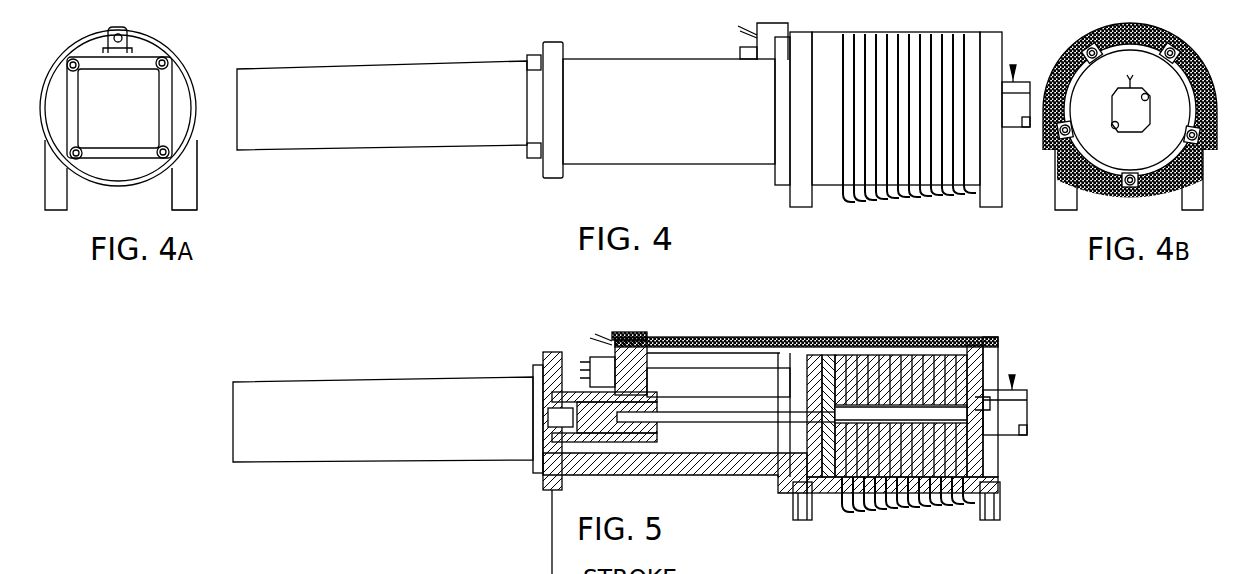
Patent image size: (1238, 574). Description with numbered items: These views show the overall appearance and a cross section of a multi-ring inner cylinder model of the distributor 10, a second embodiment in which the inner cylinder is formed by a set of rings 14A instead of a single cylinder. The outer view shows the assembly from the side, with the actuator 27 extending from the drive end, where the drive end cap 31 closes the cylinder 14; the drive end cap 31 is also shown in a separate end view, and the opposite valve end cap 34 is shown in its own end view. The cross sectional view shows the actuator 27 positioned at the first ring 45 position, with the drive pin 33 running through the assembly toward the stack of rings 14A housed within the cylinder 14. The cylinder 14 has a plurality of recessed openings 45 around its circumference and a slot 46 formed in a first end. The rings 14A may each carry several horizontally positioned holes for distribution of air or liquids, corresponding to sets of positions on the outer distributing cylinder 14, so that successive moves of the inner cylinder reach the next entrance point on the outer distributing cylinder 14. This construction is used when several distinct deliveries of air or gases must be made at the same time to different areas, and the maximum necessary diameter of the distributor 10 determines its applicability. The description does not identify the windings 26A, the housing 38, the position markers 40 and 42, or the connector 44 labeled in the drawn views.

In FIG. 4, the distributor 10 is at (540, 205).
In FIG. 5, the distributor 10 is at (535, 515).
In FIG. 5, the cylinder 14 is at (830, 490).
In FIG. 5, the rings 14A is at (940, 457).
In FIG. 4, the coil 26A is at (849, 206).
In FIG. 4, the actuator 27 is at (395, 152).
In FIG. 5, the actuator 27 is at (390, 463).
In FIG. 4A, the drive end cap 31 is at (198, 178).
In FIG. 4, the drive end cap 31 is at (802, 208).
In FIG. 5, the drive pin 33 is at (703, 425).
In FIG. 4B, the valve end cap 34 is at (1052, 196).
In FIG. 5, the housing 38 is at (688, 343).
In FIG. 5, the retracted position 40 is at (906, 567).
In FIG. 5, the extended position 42 is at (971, 567).
In FIG. 5, the connector 44 is at (1022, 398).
In FIG. 5, the recessed openings 45 is at (847, 357).
In FIG. 5, the slot 46 is at (965, 343).